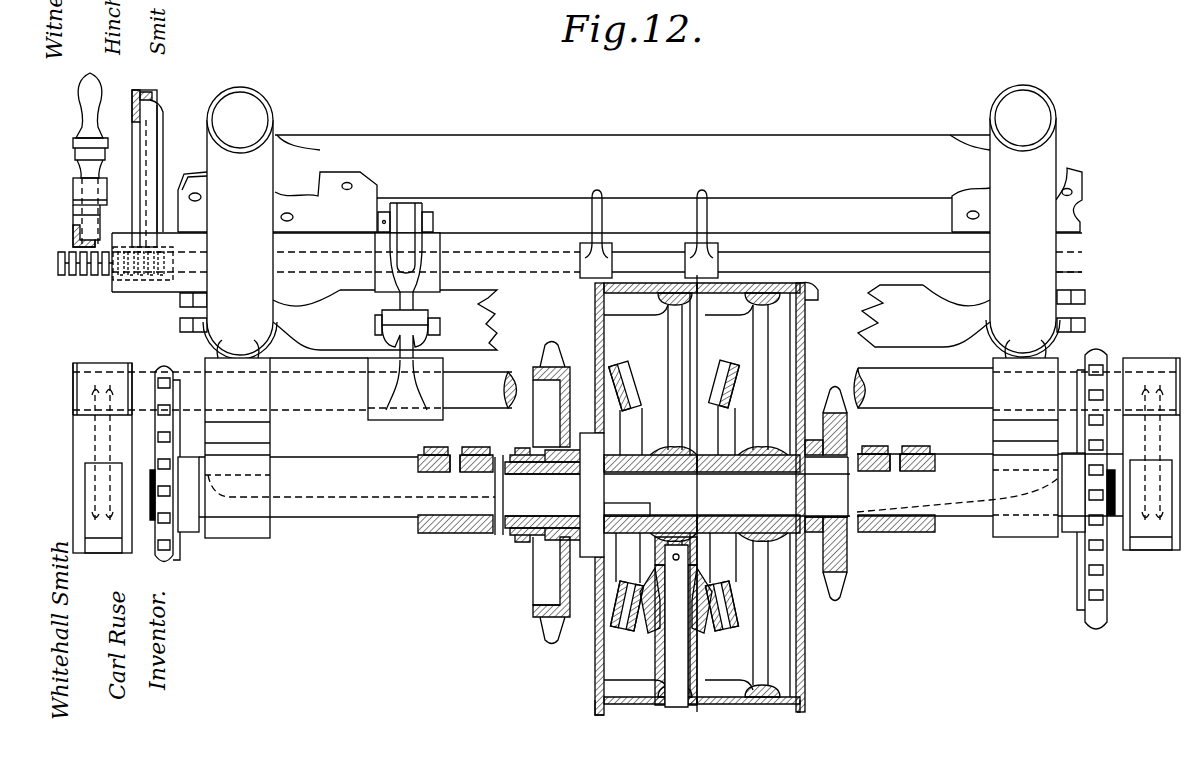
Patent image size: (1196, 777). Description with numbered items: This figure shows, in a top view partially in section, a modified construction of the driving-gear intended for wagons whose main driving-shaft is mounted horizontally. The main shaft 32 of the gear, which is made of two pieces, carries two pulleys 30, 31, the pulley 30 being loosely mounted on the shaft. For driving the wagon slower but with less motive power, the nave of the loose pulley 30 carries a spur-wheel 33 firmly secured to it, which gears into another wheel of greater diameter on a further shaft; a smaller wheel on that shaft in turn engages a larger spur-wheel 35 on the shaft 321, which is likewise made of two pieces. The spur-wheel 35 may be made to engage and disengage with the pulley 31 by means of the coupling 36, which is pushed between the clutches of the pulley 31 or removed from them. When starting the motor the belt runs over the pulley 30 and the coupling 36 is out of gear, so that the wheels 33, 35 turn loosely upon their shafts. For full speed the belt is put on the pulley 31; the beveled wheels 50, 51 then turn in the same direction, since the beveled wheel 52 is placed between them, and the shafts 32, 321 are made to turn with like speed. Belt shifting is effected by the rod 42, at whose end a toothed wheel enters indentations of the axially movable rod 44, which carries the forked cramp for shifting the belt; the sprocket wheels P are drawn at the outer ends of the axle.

The loose pulley 30 is at (772, 292).
The pulley 31 is at (652, 292).
The main shaft 32 is at (990, 489).
The shaft 321 is at (351, 491).
The spur-wheel 33 is at (835, 385).
The spur-wheel 35 is at (550, 342).
The coupling 36 is at (528, 540).
The rod 42 is at (163, 137).
The rod 44 is at (115, 273).
The beveled wheel 50 is at (636, 377).
The beveled wheel 51 is at (724, 362).
The beveled wheel 52 is at (722, 632).
The sprocket wheel P is at (175, 440).